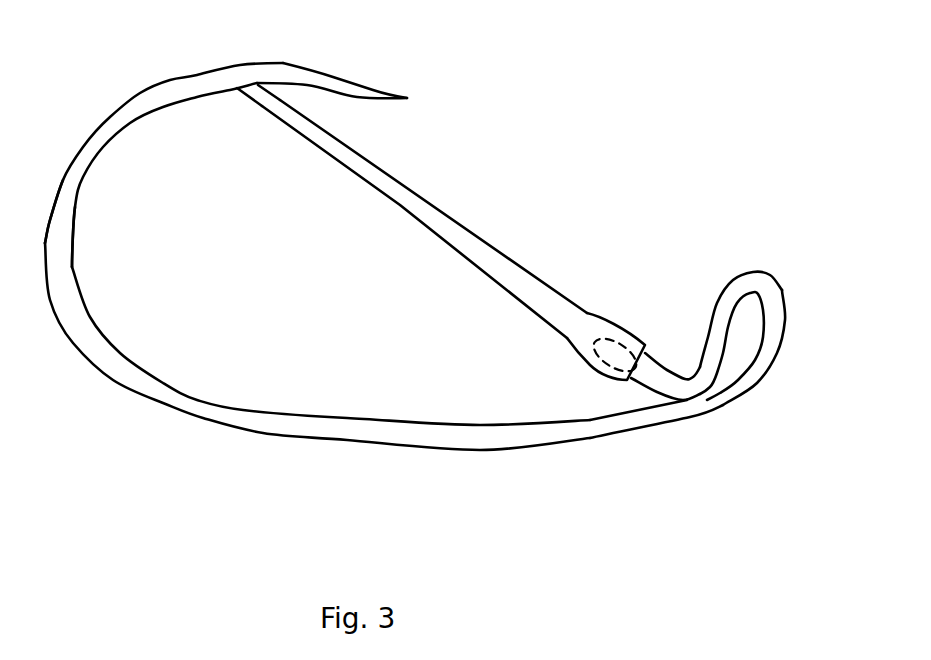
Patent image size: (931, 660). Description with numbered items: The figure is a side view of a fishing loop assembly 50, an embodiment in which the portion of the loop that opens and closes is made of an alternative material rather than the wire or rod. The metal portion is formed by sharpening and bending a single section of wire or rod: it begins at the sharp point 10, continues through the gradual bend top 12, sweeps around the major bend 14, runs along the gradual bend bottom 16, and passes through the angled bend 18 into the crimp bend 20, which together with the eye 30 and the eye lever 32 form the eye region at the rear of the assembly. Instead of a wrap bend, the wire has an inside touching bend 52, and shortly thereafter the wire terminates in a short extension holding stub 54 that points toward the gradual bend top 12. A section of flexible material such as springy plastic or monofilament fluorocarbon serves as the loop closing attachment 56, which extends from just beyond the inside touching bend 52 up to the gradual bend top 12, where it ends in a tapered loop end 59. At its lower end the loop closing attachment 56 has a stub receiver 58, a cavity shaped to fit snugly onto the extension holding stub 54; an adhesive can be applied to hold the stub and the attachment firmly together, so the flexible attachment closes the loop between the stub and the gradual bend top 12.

The sharp point 10 is at (392, 88).
The gradual bend top 12 is at (193, 75).
The major bend 14 is at (73, 250).
The gradual bend bottom 16 is at (362, 445).
The angled bend 18 is at (718, 415).
The crimp bend 20 is at (767, 272).
The eye 30 is at (747, 335).
The eye lever 32 is at (772, 365).
The fishing loop assembly 50 is at (265, 423).
The inside touching bend 52 is at (690, 376).
The extension holding stub 54 is at (597, 344).
The loop closing attachment 56 is at (473, 233).
The stub receiver 58 is at (620, 340).
The loop end 59 is at (248, 92).